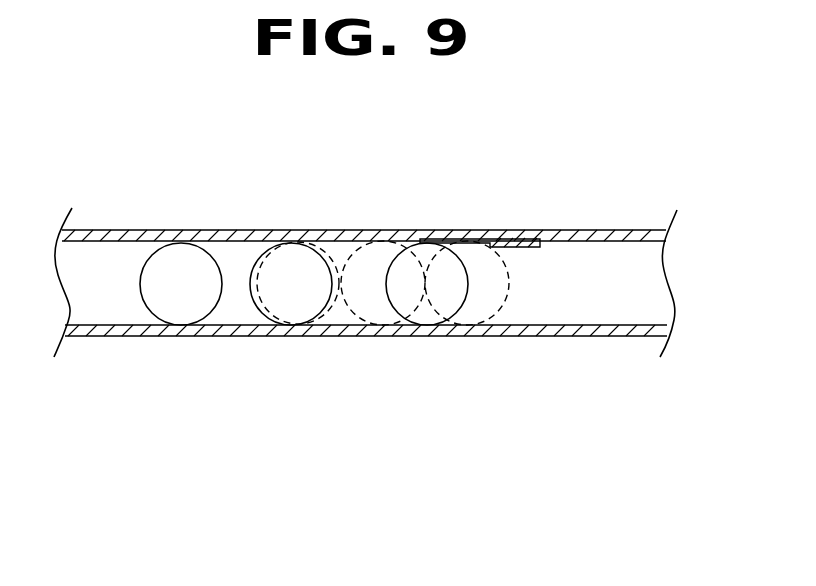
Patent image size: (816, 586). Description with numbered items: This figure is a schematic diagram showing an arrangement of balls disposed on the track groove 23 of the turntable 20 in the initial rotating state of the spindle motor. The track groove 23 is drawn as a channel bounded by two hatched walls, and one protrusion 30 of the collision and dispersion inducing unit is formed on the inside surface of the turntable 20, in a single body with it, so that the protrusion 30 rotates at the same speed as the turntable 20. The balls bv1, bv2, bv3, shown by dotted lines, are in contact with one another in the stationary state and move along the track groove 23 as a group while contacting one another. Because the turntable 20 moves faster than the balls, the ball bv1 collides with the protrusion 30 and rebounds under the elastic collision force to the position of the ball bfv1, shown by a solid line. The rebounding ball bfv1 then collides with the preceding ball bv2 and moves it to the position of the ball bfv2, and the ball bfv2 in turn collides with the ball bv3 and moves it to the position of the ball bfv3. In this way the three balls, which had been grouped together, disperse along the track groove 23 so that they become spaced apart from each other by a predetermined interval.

The turntable 20 is at (338, 447).
The track groove 23 is at (537, 293).
The protrusion 30 is at (540, 247).
The ball after rebounding bfv1 is at (424, 305).
The ball after rebounding bfv2 is at (292, 298).
The ball after rebounding bfv3 is at (180, 313).
The ball before rebounding bv1 is at (470, 305).
The ball before rebounding bv2 is at (365, 305).
The ball before rebounding bv3 is at (256, 296).